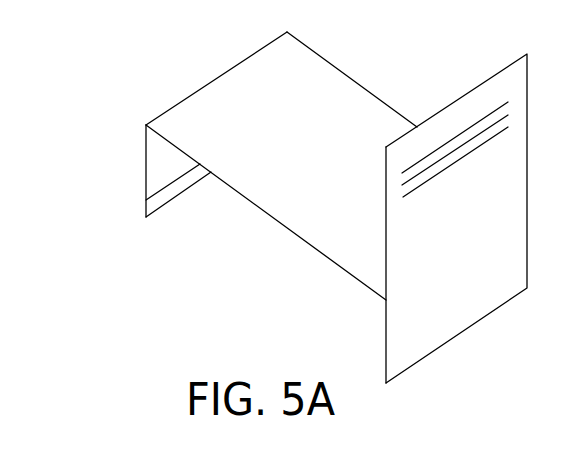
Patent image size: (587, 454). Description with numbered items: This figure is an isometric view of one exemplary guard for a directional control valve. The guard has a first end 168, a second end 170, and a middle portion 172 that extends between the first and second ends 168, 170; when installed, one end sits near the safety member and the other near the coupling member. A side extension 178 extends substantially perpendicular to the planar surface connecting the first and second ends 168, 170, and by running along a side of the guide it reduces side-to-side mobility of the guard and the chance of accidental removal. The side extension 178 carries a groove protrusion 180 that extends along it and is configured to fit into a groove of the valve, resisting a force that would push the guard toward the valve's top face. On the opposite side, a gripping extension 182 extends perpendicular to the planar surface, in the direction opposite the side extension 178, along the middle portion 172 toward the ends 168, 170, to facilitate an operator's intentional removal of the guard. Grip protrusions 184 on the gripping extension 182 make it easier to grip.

The first end 168 is at (253, 205).
The second end 170 is at (357, 82).
The middle portion 172 is at (225, 85).
The side extension 178 is at (146, 176).
The groove protrusion 180 is at (163, 192).
The gripping extension 182 is at (527, 130).
The grip protrusion 184 is at (458, 137).